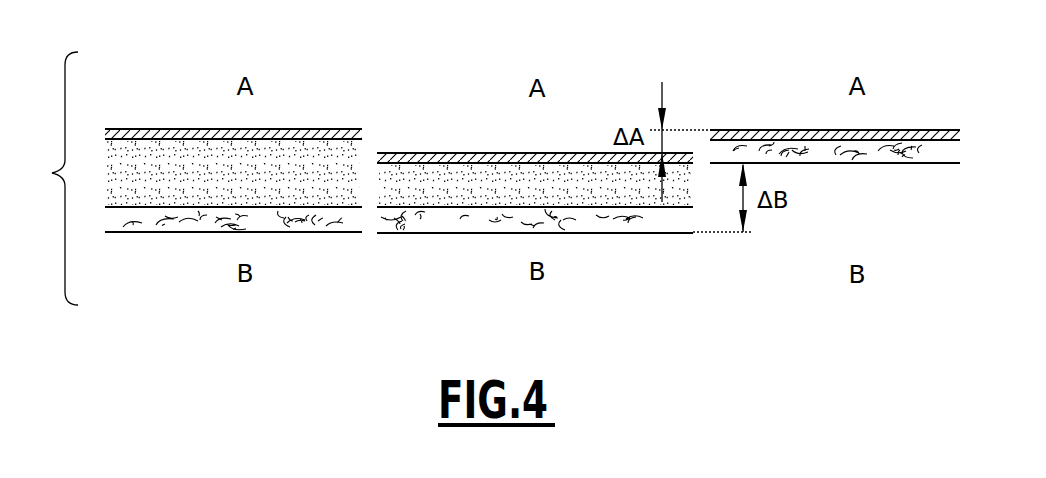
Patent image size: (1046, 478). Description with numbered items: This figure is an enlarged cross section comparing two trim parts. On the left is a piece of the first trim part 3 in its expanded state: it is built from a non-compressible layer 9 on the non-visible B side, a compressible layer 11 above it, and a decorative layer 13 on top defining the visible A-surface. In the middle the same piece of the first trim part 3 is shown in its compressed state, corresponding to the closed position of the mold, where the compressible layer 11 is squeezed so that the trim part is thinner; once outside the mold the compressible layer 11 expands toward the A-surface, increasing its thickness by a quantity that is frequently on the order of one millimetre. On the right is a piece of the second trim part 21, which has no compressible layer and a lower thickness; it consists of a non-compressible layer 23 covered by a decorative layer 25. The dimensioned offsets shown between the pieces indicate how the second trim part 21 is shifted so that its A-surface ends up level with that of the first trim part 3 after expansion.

The first trim part 3 is at (104, 178).
The non-compressible layer 9 is at (167, 227).
The compressible layer 11 is at (147, 163).
The decorative layer 13 is at (203, 133).
The second trim part 21 is at (903, 98).
The non-compressible layer 23 is at (877, 163).
The decorative layer 25 is at (773, 130).